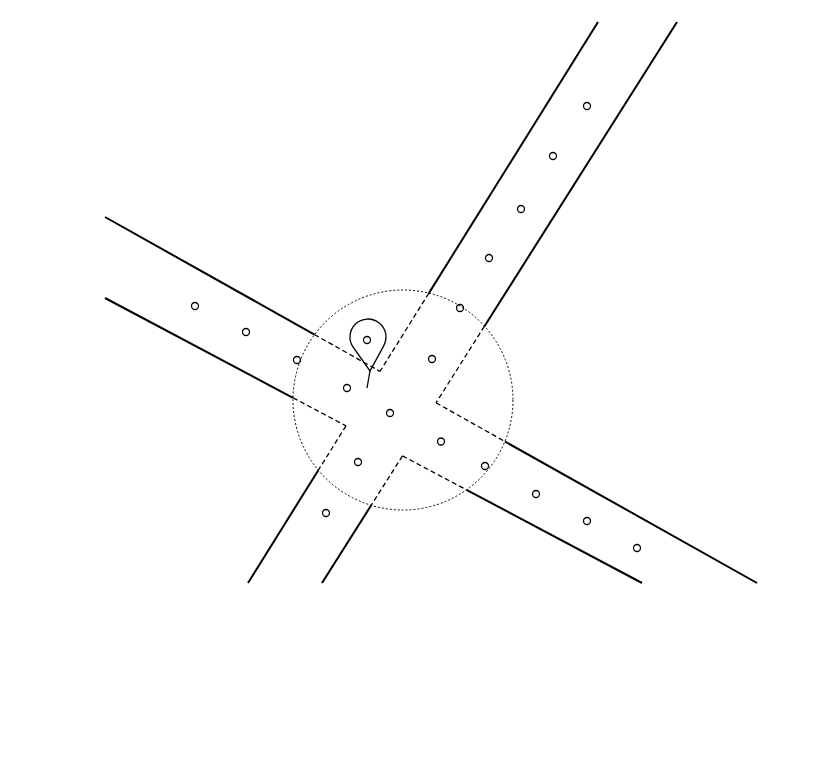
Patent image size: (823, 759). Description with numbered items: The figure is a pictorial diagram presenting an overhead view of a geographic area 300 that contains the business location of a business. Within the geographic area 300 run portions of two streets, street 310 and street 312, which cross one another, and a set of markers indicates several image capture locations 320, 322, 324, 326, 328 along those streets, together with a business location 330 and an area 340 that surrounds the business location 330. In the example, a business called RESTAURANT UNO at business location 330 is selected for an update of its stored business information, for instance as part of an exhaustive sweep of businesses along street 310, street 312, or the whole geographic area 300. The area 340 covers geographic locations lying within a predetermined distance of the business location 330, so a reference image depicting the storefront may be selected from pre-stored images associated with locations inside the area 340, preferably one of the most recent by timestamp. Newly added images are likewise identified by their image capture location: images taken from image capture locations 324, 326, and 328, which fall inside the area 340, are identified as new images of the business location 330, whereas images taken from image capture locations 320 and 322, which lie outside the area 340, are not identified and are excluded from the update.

The geographic area 300 is at (88, 706).
The street 310 is at (133, 262).
The street 312 is at (620, 58).
The image capture location 320 is at (242, 332).
The image capture location 322 is at (293, 361).
The image capture location 324 is at (343, 388).
The image capture location 326 is at (393, 413).
The image capture location 328 is at (435, 359).
The business location 330 is at (368, 317).
The area surrounding the business location 340 is at (403, 512).